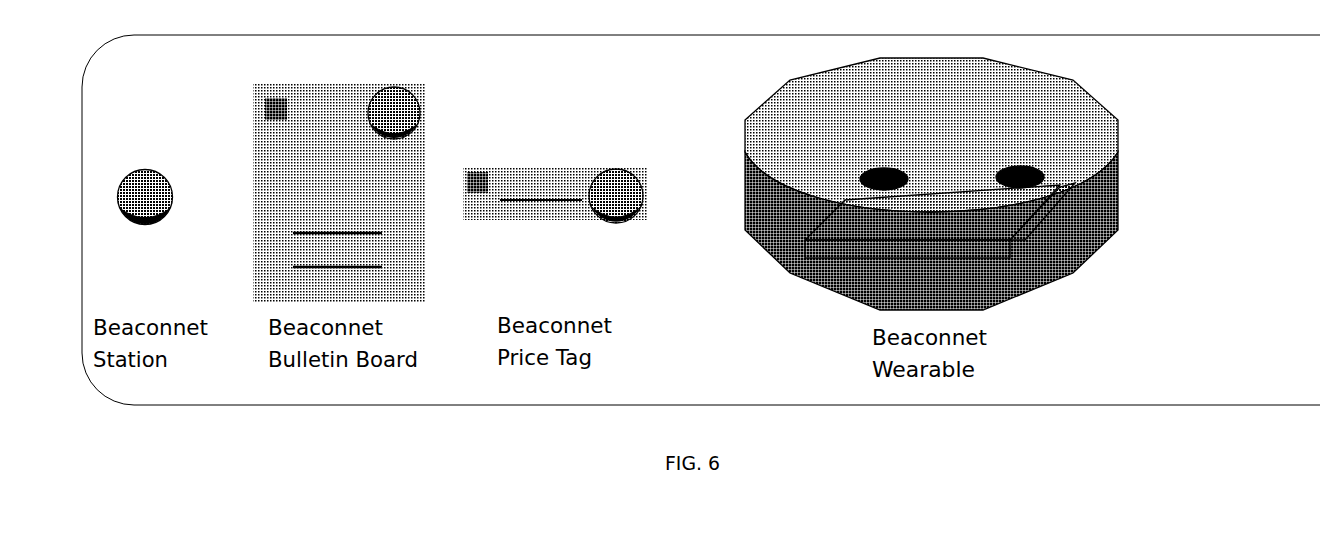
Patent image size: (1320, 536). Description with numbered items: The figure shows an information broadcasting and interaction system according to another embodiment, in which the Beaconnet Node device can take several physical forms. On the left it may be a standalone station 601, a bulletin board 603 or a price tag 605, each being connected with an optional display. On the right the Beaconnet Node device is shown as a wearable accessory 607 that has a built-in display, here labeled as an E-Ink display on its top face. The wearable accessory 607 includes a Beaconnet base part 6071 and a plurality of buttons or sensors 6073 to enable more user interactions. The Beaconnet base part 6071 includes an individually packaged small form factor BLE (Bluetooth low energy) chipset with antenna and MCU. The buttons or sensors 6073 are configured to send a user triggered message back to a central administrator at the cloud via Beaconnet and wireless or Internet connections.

The standalone station 601 is at (146, 197).
The bulletin board 603 is at (408, 113).
The price tag 605 is at (613, 195).
The wearable accessory 607 is at (963, 179).
The Beaconnet base part 6071 is at (998, 247).
The buttons or sensors 6073 is at (1040, 168).